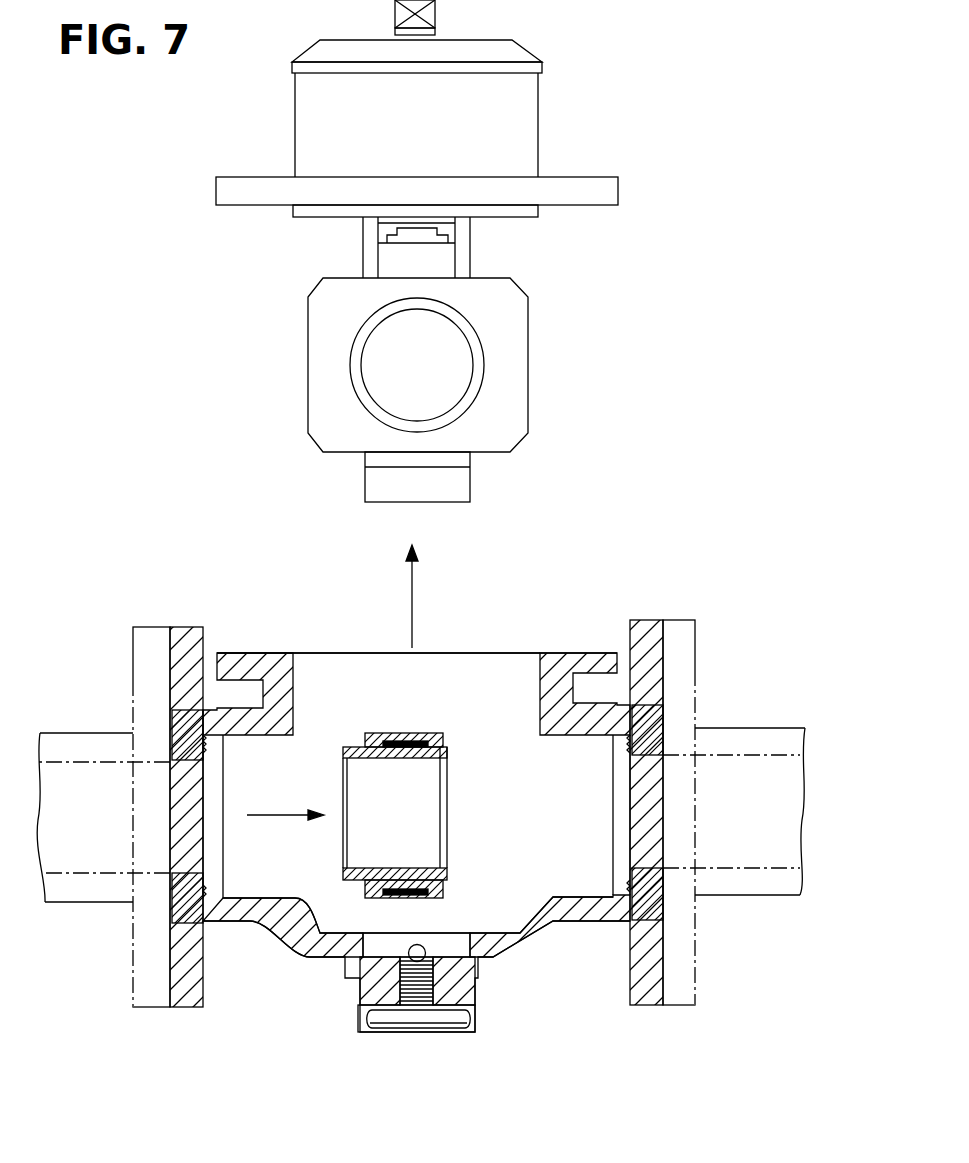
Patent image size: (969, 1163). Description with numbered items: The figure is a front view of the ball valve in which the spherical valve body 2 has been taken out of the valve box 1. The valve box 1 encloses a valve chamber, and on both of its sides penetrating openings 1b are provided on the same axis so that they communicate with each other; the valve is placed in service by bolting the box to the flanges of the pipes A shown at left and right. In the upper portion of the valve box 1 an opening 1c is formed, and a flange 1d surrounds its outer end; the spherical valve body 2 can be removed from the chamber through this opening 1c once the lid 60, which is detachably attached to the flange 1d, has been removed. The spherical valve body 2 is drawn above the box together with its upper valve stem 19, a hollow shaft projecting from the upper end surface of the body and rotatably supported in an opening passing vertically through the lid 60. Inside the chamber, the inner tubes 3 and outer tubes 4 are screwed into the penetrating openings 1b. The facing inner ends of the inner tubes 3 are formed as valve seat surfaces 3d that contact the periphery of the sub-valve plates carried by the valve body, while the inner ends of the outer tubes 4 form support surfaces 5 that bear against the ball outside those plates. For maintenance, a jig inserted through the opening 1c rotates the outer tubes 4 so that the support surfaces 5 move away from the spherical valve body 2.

The valve box 1 is at (445, 363).
The penetrating opening 1b is at (247, 865).
The opening 1c is at (478, 662).
The flange 1d is at (592, 660).
The spherical valve body 2 is at (510, 297).
The inner tube 3 is at (407, 785).
The valve seat surface 3d is at (443, 758).
The outer tube 4 is at (415, 733).
The support surface 5 is at (443, 742).
The upper valve stem 19 is at (368, 241).
The lid 60 is at (572, 185).
The pipe A is at (68, 745).